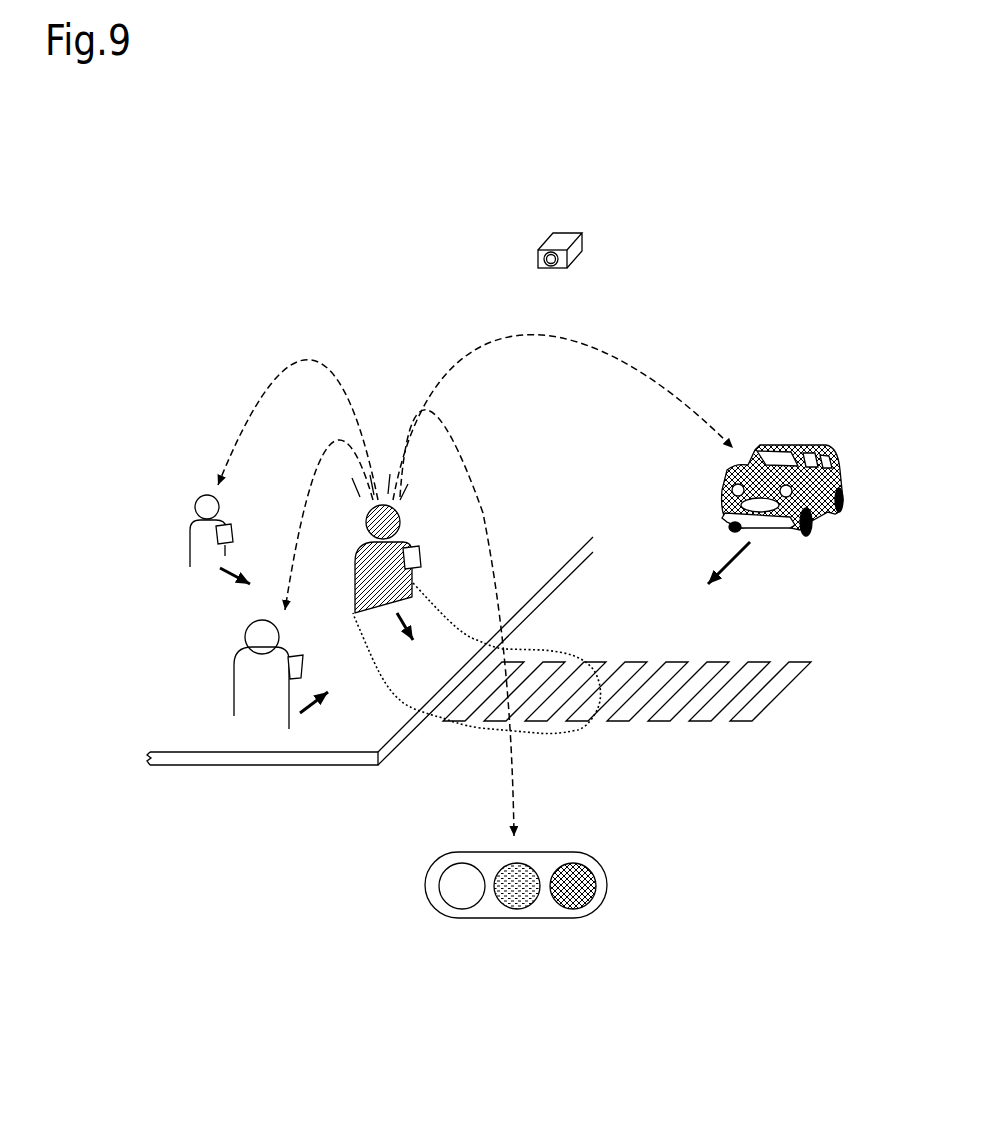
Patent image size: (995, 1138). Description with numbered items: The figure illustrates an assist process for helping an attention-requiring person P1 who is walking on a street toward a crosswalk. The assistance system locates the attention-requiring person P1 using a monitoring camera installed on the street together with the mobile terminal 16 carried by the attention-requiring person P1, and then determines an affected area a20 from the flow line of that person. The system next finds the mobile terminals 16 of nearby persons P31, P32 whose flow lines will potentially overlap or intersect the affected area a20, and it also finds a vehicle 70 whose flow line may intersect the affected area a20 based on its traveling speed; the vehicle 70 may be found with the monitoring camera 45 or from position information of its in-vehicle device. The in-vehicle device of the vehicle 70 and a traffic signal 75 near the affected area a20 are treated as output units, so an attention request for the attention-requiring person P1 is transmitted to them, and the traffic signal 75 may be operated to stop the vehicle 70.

The monitoring camera 45 is at (568, 236).
The vehicle 70 is at (812, 445).
The traffic signal 75 is at (585, 852).
The mobile terminal 16 is at (420, 550).
The attention-requiring person P1 is at (398, 512).
The nearby person P31 is at (234, 690).
The nearby person P32 is at (190, 548).
The affected area a20 is at (547, 650).